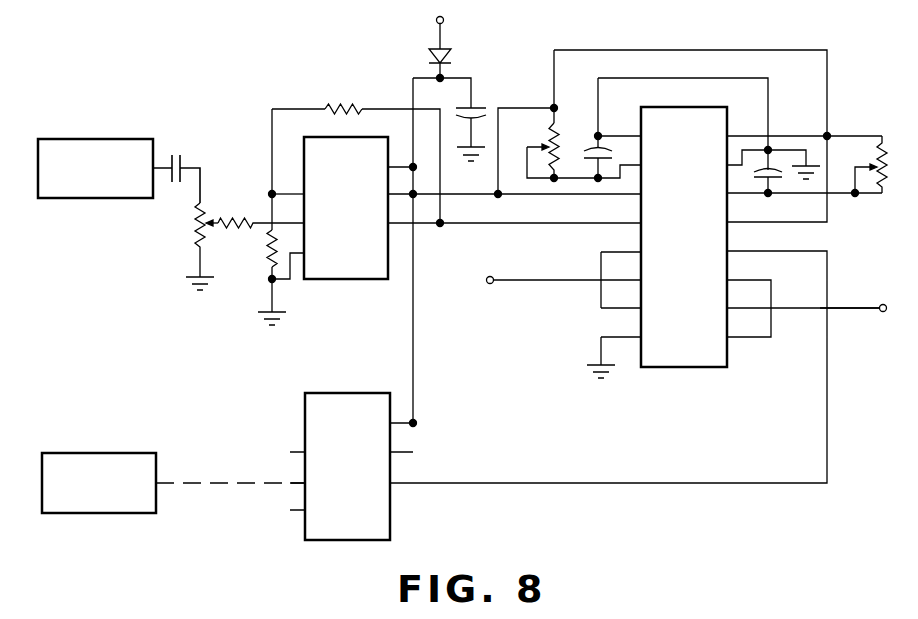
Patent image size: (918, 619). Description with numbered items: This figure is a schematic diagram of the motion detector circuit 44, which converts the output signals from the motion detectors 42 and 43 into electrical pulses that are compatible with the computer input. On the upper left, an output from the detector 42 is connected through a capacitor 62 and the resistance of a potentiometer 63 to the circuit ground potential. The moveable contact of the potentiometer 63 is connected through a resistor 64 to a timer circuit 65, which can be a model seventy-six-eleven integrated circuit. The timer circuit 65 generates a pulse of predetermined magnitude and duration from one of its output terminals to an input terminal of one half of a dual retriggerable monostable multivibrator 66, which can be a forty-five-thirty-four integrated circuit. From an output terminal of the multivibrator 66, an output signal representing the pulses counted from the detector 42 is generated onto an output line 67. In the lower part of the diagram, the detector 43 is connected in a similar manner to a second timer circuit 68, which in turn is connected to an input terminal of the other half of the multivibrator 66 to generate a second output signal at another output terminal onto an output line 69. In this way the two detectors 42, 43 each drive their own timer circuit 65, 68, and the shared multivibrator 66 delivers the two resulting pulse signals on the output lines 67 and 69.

The motion detector 42 is at (73, 139).
The motion detector 43 is at (90, 452).
The motion detector circuit 44 is at (204, 87).
The capacitor 62 is at (181, 157).
The potentiometer 63 is at (198, 232).
The resistor 64 is at (238, 218).
The timer circuit 65 is at (333, 280).
The dual retriggerable monostable multivibrator 66 is at (680, 368).
The output line 67 is at (542, 282).
The timer circuit 68 is at (333, 393).
The output line 69 is at (850, 310).